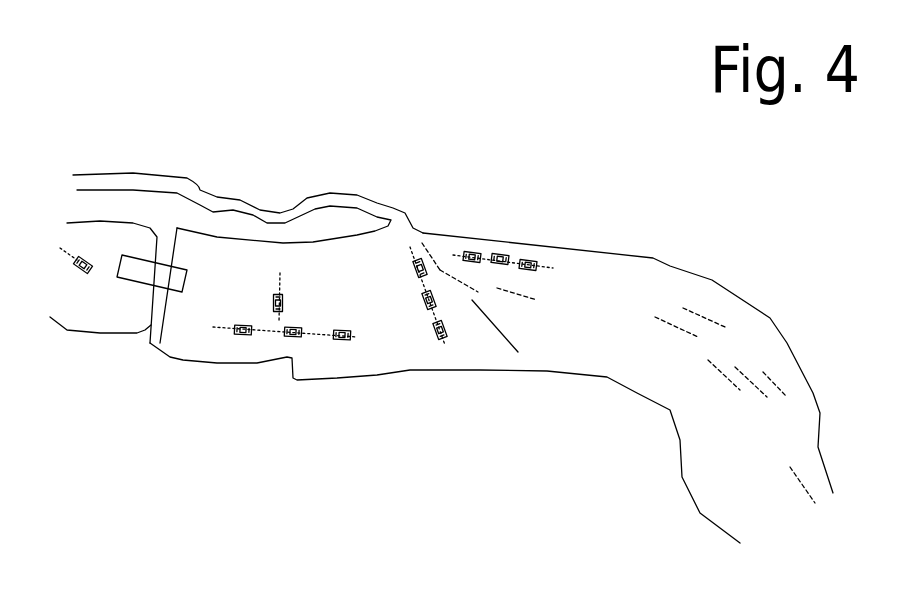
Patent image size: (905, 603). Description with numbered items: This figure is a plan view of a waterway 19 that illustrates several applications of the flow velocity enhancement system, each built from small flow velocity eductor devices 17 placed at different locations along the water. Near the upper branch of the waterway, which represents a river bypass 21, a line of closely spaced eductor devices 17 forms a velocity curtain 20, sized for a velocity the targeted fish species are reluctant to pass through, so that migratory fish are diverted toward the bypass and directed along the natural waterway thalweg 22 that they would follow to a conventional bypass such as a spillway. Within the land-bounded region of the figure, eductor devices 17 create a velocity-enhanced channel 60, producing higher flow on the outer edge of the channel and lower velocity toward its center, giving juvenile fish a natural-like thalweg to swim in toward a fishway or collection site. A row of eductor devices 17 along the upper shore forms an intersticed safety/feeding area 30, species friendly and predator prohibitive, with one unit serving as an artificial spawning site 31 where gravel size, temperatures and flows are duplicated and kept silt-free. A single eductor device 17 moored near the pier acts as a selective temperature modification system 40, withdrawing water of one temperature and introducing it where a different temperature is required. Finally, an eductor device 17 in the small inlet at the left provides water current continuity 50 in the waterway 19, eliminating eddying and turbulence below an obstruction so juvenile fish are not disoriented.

The flow velocity eductor device 17 is at (68, 281).
The waterway 19 is at (712, 280).
The velocity curtain 20 is at (427, 315).
The river bypass 21 is at (230, 195).
The natural waterway thalweg 22 is at (510, 330).
The intersticed safety/feeding area 30 is at (502, 253).
The artificial spawning site 31 is at (537, 260).
The selective temperature modification system 40 is at (267, 308).
The water current continuity 50 is at (68, 268).
The velocity-enhanced thalweg or channel 60 is at (283, 249).